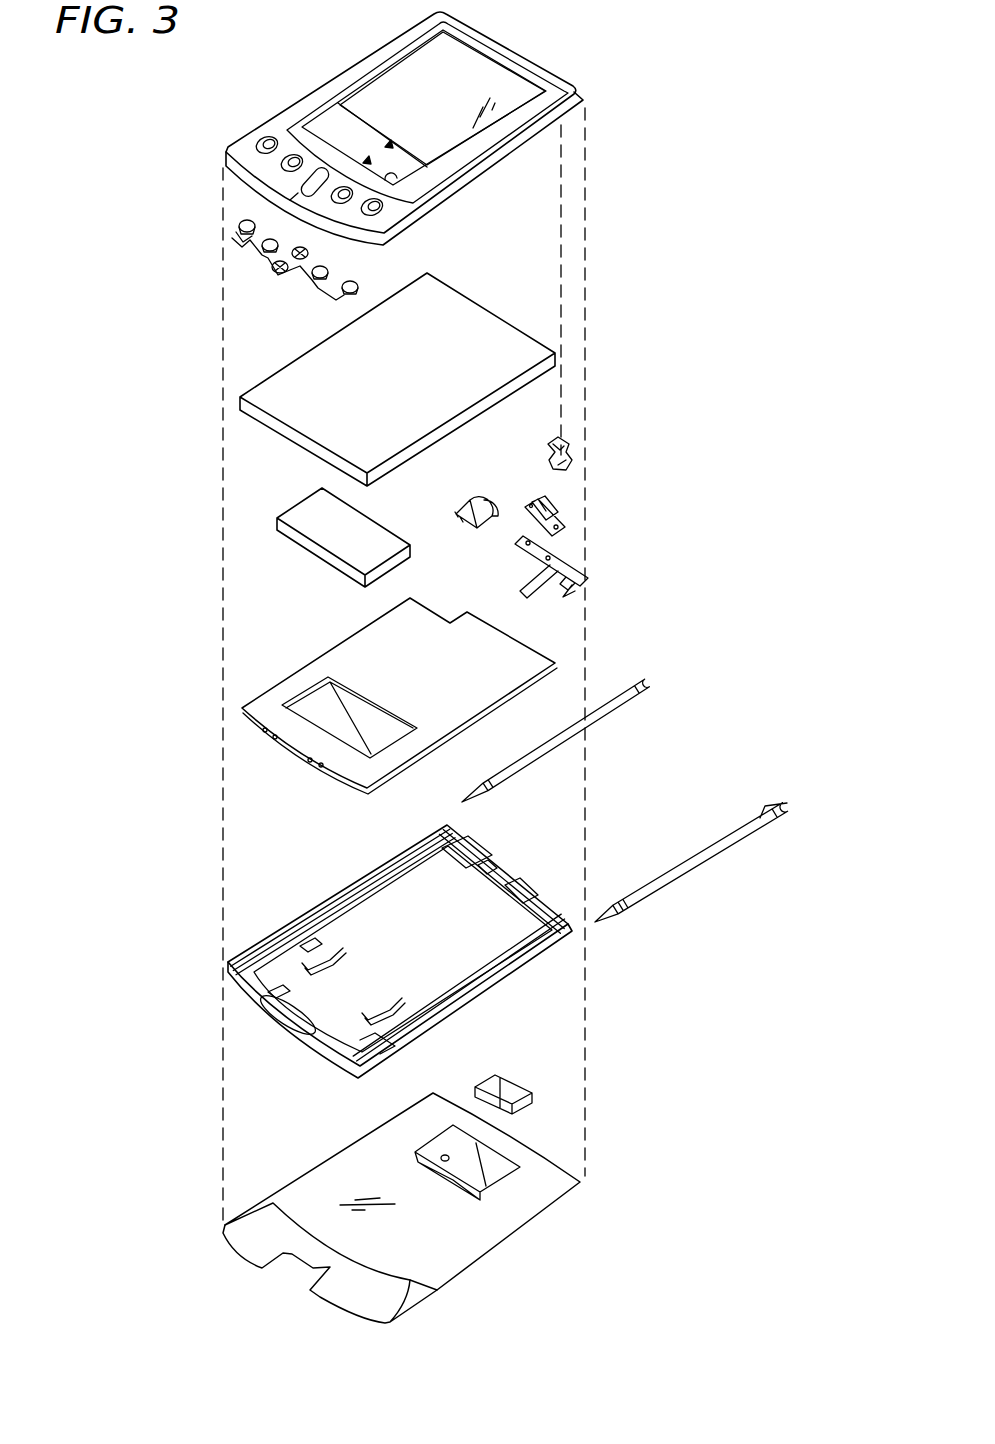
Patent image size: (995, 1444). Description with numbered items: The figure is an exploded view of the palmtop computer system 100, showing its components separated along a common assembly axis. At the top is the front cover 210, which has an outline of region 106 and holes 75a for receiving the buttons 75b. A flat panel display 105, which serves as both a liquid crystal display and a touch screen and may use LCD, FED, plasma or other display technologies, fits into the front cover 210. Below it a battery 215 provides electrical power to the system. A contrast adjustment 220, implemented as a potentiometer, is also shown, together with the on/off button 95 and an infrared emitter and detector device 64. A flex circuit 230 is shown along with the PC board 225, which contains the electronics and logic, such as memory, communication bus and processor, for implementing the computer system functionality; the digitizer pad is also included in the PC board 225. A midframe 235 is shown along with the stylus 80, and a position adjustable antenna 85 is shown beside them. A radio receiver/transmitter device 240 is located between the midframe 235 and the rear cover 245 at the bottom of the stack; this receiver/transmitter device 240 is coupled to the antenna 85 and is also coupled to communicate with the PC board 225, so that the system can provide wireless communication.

The palmtop computer system 100 is at (131, 76).
The front cover 210 is at (598, 96).
The region 106 is at (320, 121).
The holes 75a is at (248, 141).
The buttons 75b is at (232, 218).
The flat panel display 105 is at (236, 378).
The battery 215 is at (262, 509).
The contrast adjustment 220 is at (480, 485).
The on/off button 95 is at (590, 442).
The infrared emitter and detector device 64 is at (578, 503).
The flex circuit 230 is at (590, 555).
The PC board 225 is at (240, 682).
The position adjustable antenna 85 is at (670, 676).
The stylus 80 is at (790, 790).
The midframe 235 is at (555, 975).
The radio receiver/transmitter device 240 is at (516, 1072).
The rear cover 245 is at (552, 1217).